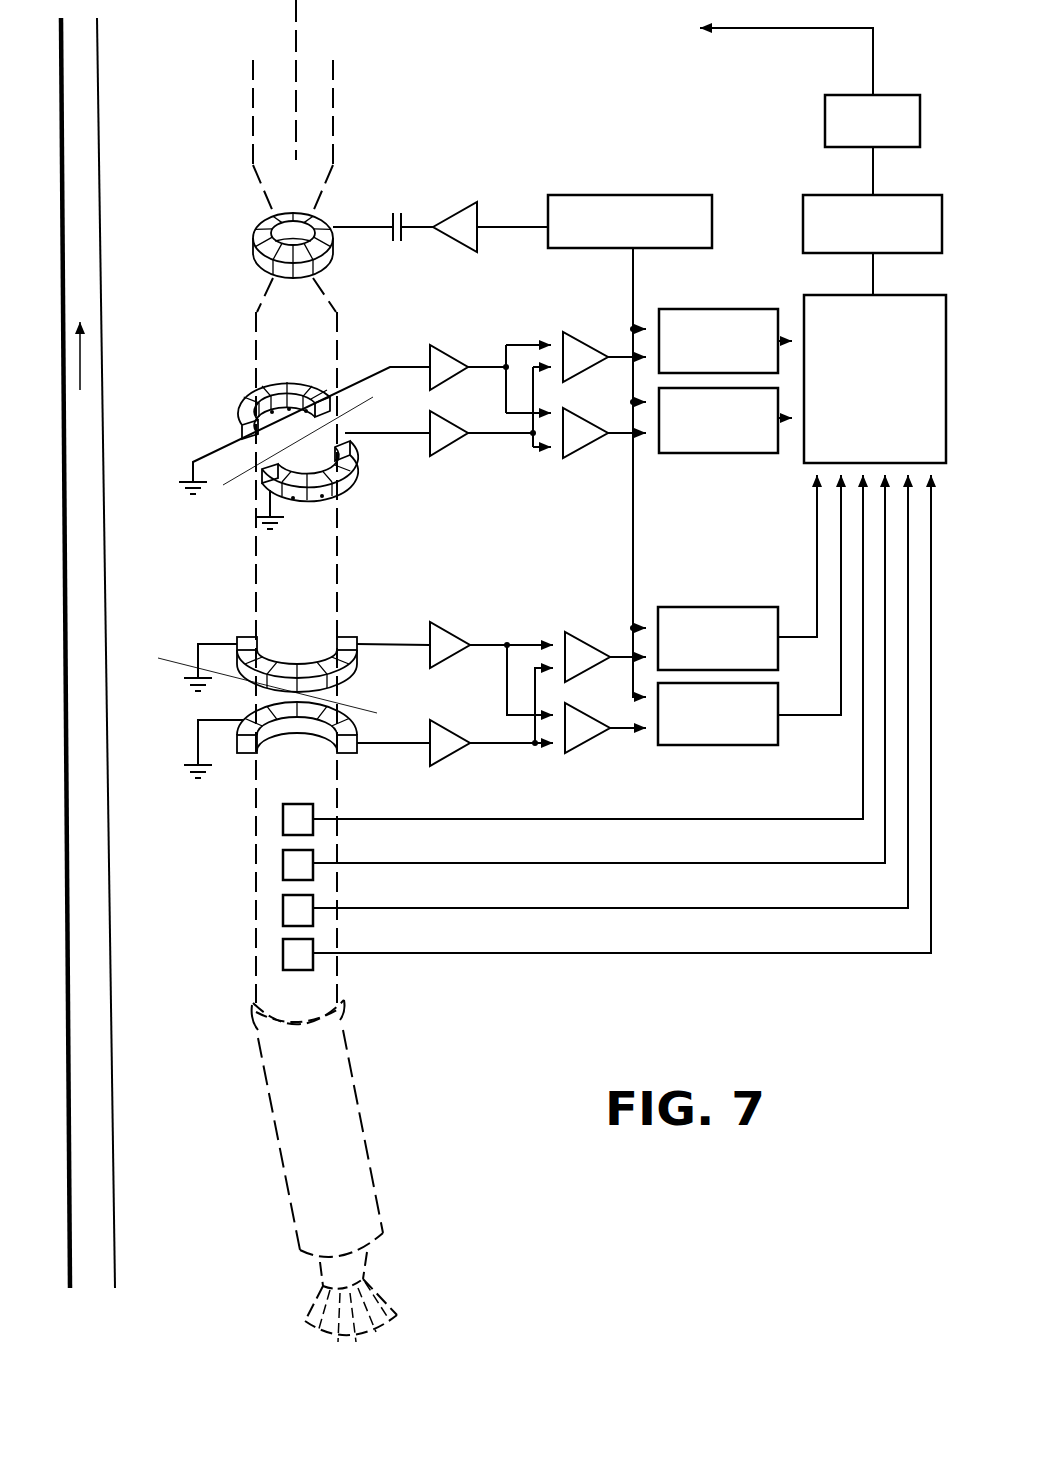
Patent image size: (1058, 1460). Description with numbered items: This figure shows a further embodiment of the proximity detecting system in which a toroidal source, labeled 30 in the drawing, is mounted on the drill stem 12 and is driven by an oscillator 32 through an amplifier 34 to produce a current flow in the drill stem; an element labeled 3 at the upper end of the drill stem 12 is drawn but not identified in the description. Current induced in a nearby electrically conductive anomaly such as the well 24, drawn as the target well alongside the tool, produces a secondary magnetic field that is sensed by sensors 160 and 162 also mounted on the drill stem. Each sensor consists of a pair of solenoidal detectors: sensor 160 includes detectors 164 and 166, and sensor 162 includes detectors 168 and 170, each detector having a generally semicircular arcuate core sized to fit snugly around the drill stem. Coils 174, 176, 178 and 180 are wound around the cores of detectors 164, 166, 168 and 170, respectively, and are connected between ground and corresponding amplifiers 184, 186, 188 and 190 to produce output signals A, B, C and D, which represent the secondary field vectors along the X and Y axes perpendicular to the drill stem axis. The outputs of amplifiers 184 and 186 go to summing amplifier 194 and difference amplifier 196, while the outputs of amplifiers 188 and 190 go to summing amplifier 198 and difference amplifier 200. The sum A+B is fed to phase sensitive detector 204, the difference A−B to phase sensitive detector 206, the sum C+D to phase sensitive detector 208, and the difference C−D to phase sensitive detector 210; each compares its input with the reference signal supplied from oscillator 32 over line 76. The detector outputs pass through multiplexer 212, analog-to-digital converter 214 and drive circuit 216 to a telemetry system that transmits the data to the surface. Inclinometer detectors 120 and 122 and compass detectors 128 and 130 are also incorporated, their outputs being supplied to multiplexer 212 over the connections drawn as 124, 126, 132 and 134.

The drill string 3 is at (298, 47).
The drill stem 12 is at (334, 128).
The well 24 is at (113, 938).
The transmitter toroidal coil 30 is at (252, 247).
The oscillator 32 is at (618, 193).
The amplifier 34 is at (460, 205).
The line 76 is at (633, 295).
The sensor 160 is at (294, 447).
The sensor 162 is at (281, 703).
The detector 164 is at (240, 430).
The detector 166 is at (356, 471).
The detector 168 is at (243, 637).
The detector 170 is at (260, 755).
The coil 174 is at (247, 390).
The coil 176 is at (334, 486).
The coil 178 is at (288, 655).
The coil 180 is at (240, 732).
The amplifier 184 is at (430, 352).
The amplifier 186 is at (430, 424).
The amplifier 188 is at (430, 628).
The amplifier 190 is at (430, 722).
The summing amplifier 194 is at (563, 330).
The difference amplifier 196 is at (590, 452).
The summing amplifier 198 is at (565, 630).
The difference amplifier 200 is at (590, 745).
The phase sensitive detector 204 is at (700, 308).
The phase sensitive detector 206 is at (720, 455).
The phase sensitive detector 208 is at (700, 608).
The phase sensitive detector 210 is at (722, 752).
The multiplexer 212 is at (822, 465).
The analog-to-digital converter 214 is at (803, 197).
The drive circuit 216 is at (823, 113).
The inclinometer detector 120 is at (313, 812).
The inclinometer detector 122 is at (313, 860).
The compass detector 128 is at (313, 903).
The compass detector 130 is at (313, 948).
The sensor output line 124 is at (478, 818).
The sensor output line 126 is at (478, 862).
The sensor output line 132 is at (478, 907).
The sensor output line 134 is at (478, 952).